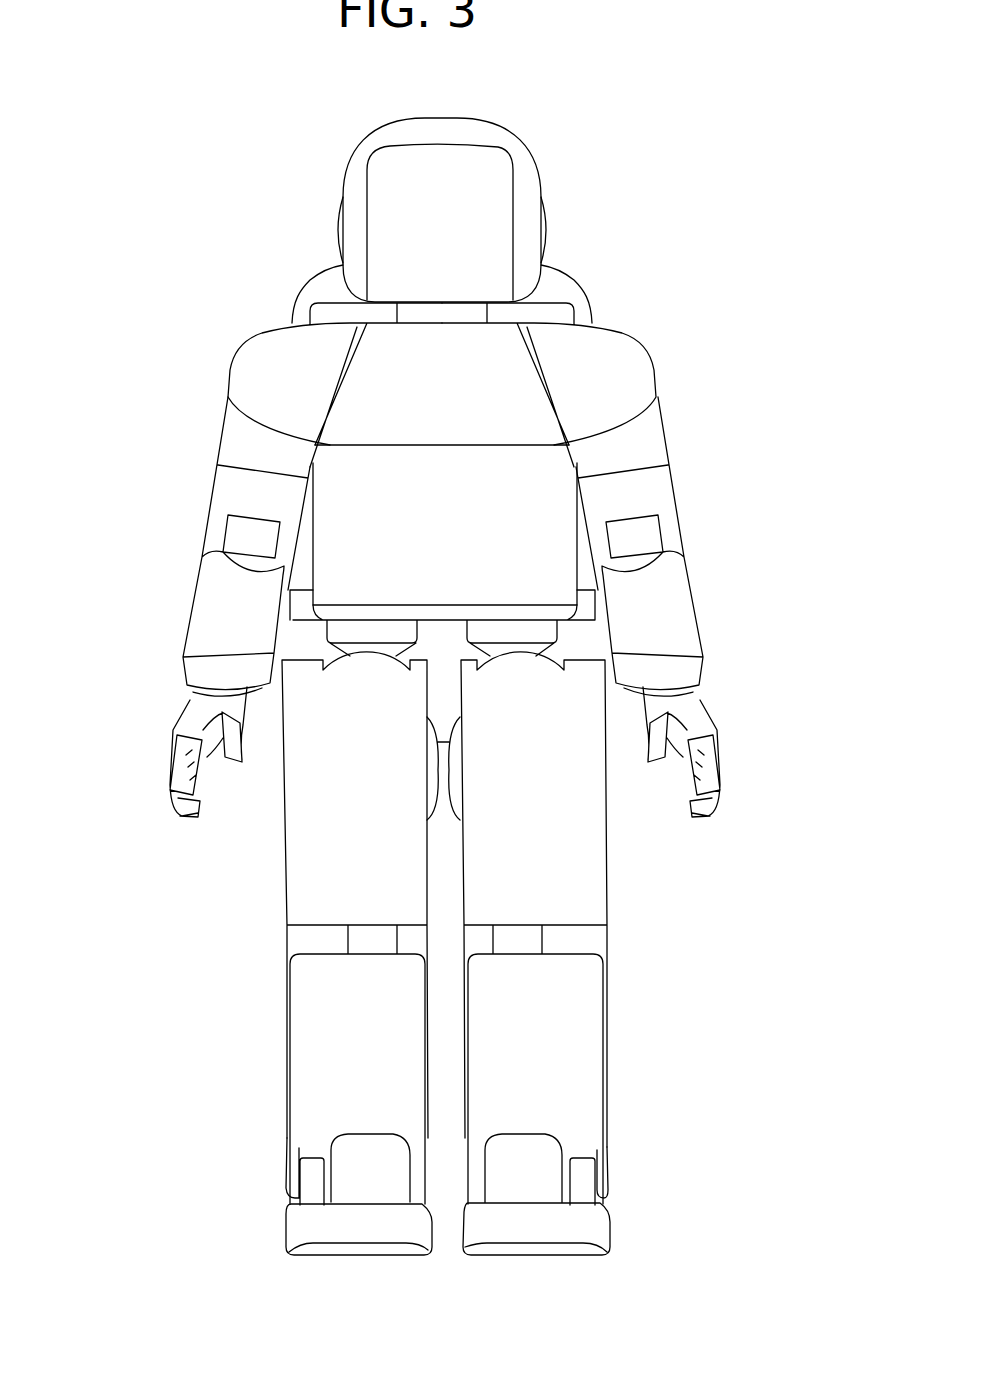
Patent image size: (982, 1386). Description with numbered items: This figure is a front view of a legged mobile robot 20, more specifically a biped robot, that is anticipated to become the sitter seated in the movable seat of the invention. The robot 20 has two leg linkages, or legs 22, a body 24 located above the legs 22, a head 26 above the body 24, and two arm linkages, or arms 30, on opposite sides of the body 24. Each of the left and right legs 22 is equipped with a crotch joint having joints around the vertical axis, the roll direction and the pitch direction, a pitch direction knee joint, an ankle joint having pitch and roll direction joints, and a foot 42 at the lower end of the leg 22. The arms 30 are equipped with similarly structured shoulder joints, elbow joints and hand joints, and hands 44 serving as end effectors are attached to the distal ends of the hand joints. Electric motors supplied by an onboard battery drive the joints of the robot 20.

The robot 20 is at (603, 209).
The leg linkages 22 is at (255, 894).
The body 24 is at (548, 520).
The head 26 is at (492, 137).
The arm linkages 30 is at (196, 461).
The foot 42 is at (498, 1231).
The hands 44 is at (178, 728).